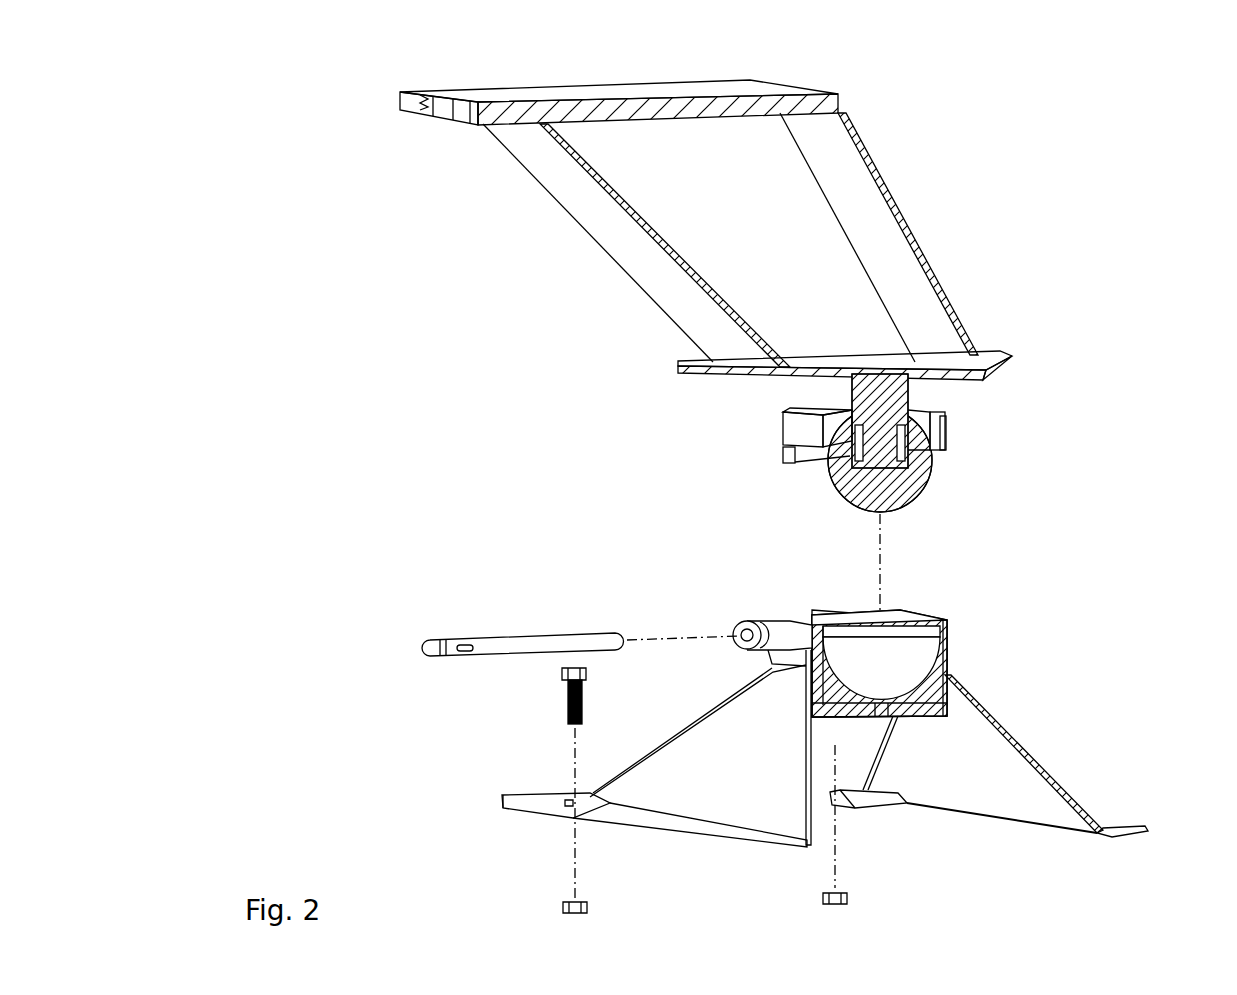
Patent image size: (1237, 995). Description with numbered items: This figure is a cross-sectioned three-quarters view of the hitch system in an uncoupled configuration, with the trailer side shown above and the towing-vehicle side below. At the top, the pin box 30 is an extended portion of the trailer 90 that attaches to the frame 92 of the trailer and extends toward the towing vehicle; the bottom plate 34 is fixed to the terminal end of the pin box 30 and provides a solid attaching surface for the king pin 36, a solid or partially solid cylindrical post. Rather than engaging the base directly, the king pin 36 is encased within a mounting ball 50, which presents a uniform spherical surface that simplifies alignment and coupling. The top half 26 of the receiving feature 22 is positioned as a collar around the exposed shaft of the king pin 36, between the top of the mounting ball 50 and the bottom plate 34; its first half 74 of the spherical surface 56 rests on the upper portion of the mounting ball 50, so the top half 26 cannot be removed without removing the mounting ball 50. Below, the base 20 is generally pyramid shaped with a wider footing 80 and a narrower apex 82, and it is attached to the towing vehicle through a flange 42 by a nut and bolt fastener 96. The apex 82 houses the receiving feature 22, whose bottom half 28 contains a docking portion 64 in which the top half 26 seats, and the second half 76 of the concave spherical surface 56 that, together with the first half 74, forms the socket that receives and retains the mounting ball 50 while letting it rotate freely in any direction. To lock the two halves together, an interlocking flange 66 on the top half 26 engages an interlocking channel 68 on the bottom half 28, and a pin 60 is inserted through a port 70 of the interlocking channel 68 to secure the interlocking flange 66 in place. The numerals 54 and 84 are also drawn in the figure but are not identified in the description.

The base 20 is at (1033, 755).
The receiving feature 22 is at (790, 422).
The top half 26 is at (947, 420).
The bottom half 28 is at (918, 613).
The pin box 30 is at (917, 250).
The bottom plate 34 is at (998, 365).
The king pin 36 is at (910, 388).
The flange 42 is at (753, 837).
The mounting ball 50 is at (890, 485).
The neck 54 is at (850, 457).
The spherical surface 56 is at (903, 655).
The pin 60 is at (530, 645).
The docking portion 64 is at (923, 630).
The interlocking flange 66 is at (773, 455).
The interlocking channel 68 is at (850, 633).
The port 70 is at (737, 633).
The first half 74 is at (945, 450).
The second half 76 is at (838, 700).
The footing 80 is at (1090, 813).
The apex 82 is at (953, 673).
The nut 84 is at (812, 773).
The trailer 90 is at (443, 88).
The frame 92 is at (457, 120).
The fastener 96 is at (552, 680).